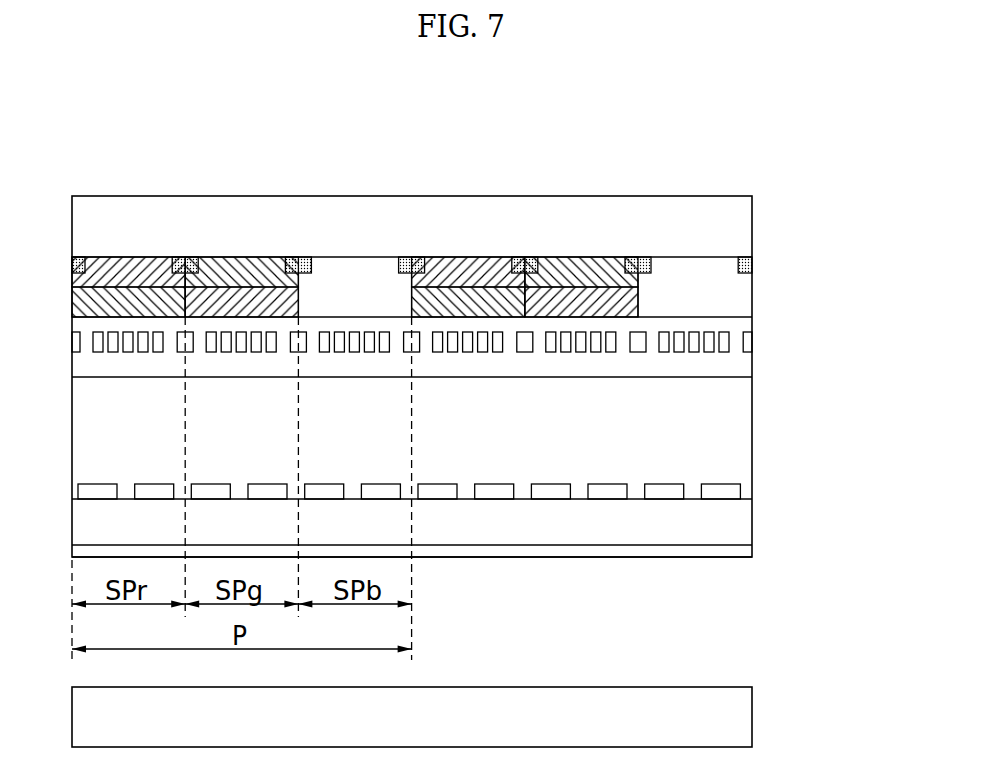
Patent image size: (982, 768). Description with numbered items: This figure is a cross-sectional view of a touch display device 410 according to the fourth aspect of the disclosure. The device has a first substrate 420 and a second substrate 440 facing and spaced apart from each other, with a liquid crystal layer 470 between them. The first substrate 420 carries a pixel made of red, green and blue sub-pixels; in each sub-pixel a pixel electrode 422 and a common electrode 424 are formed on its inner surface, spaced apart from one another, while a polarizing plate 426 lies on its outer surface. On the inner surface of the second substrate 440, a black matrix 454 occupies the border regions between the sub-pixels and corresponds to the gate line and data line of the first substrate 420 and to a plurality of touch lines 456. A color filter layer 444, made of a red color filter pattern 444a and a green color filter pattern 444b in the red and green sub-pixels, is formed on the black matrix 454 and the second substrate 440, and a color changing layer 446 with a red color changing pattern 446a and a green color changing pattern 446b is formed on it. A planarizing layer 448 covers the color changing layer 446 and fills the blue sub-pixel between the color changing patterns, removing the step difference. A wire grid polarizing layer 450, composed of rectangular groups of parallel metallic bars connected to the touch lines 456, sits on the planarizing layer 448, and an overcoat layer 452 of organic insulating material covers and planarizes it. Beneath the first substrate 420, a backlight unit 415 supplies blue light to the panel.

The touch display device 410 is at (443, 124).
The backlight unit 415 is at (753, 718).
The first substrate 420 is at (462, 563).
The pixel electrode 422 is at (437, 500).
The common electrode 424 is at (503, 500).
The polarizing plate 426 is at (753, 550).
The second substrate 440 is at (753, 222).
The color filter layer 444 is at (355, 191).
The red color filter pattern 444a is at (129, 257).
The green color filter pattern 444b is at (247, 257).
The color changing layer 446 is at (355, 375).
The red color changing pattern 446a is at (138, 318).
The green color changing pattern 446b is at (238, 318).
The planarizing layer 448 is at (462, 280).
The wire grid polarizing layer 450 is at (462, 387).
The overcoat layer 452 is at (753, 373).
The black matrix 454 is at (524, 257).
The touch line 456 is at (523, 353).
The liquid crystal layer 470 is at (753, 425).